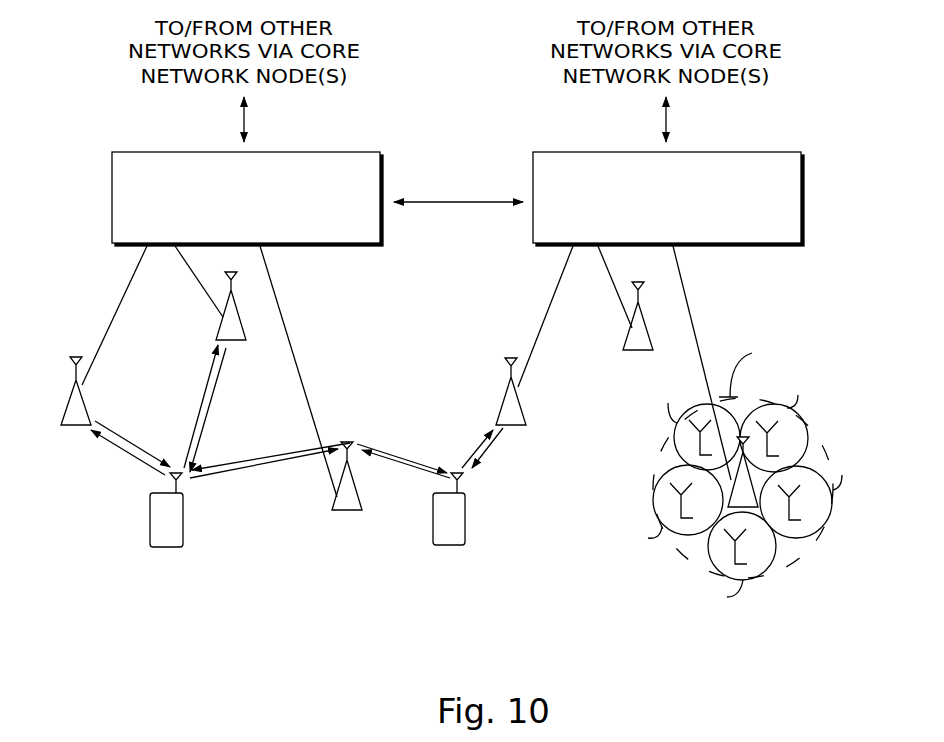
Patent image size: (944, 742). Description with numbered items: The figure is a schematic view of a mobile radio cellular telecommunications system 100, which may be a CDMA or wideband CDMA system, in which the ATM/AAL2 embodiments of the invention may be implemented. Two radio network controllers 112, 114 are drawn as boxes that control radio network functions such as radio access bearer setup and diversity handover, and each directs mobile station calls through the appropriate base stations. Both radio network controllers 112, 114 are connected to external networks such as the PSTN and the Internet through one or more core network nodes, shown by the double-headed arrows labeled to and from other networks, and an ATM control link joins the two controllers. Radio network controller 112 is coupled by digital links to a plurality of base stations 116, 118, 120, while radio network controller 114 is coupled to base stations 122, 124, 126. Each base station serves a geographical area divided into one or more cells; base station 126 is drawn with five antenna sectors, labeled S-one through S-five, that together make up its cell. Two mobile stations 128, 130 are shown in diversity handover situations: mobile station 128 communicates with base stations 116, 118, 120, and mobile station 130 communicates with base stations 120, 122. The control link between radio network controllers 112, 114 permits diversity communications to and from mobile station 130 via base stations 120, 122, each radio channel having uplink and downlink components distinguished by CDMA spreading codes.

The mobile radio cellular telecommunications system 100 is at (64, 194).
The radio network controller 112 is at (338, 157).
The radio network controller 114 is at (758, 157).
The base station 116 is at (75, 387).
The base station 118 is at (247, 331).
The base station 120 is at (363, 501).
The base station 122 is at (527, 419).
The base station 124 is at (654, 342).
The base station 126 is at (733, 478).
The mobile station 128 is at (184, 546).
The mobile station 130 is at (466, 545).